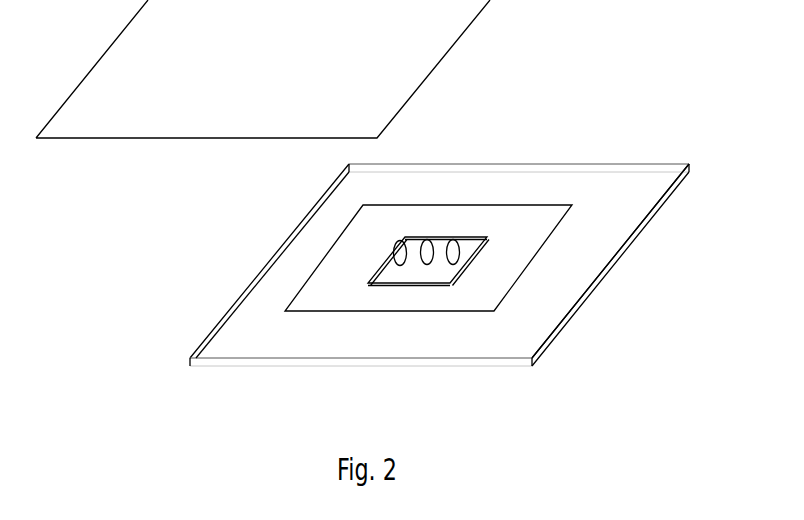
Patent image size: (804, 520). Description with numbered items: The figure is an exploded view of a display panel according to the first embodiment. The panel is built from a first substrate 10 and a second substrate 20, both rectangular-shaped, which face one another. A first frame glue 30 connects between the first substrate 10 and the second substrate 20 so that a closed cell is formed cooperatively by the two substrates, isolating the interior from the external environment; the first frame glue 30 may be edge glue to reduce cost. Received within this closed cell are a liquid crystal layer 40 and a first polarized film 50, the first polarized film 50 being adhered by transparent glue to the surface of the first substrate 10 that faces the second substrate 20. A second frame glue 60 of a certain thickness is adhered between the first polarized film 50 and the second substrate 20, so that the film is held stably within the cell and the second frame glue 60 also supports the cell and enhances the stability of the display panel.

The first substrate 10 is at (613, 188).
The second substrate 20 is at (245, 115).
The first frame glue 30 is at (623, 257).
The liquid crystal layer 40 is at (453, 250).
The first polarized film 50 is at (477, 293).
The second frame glue 60 is at (400, 283).